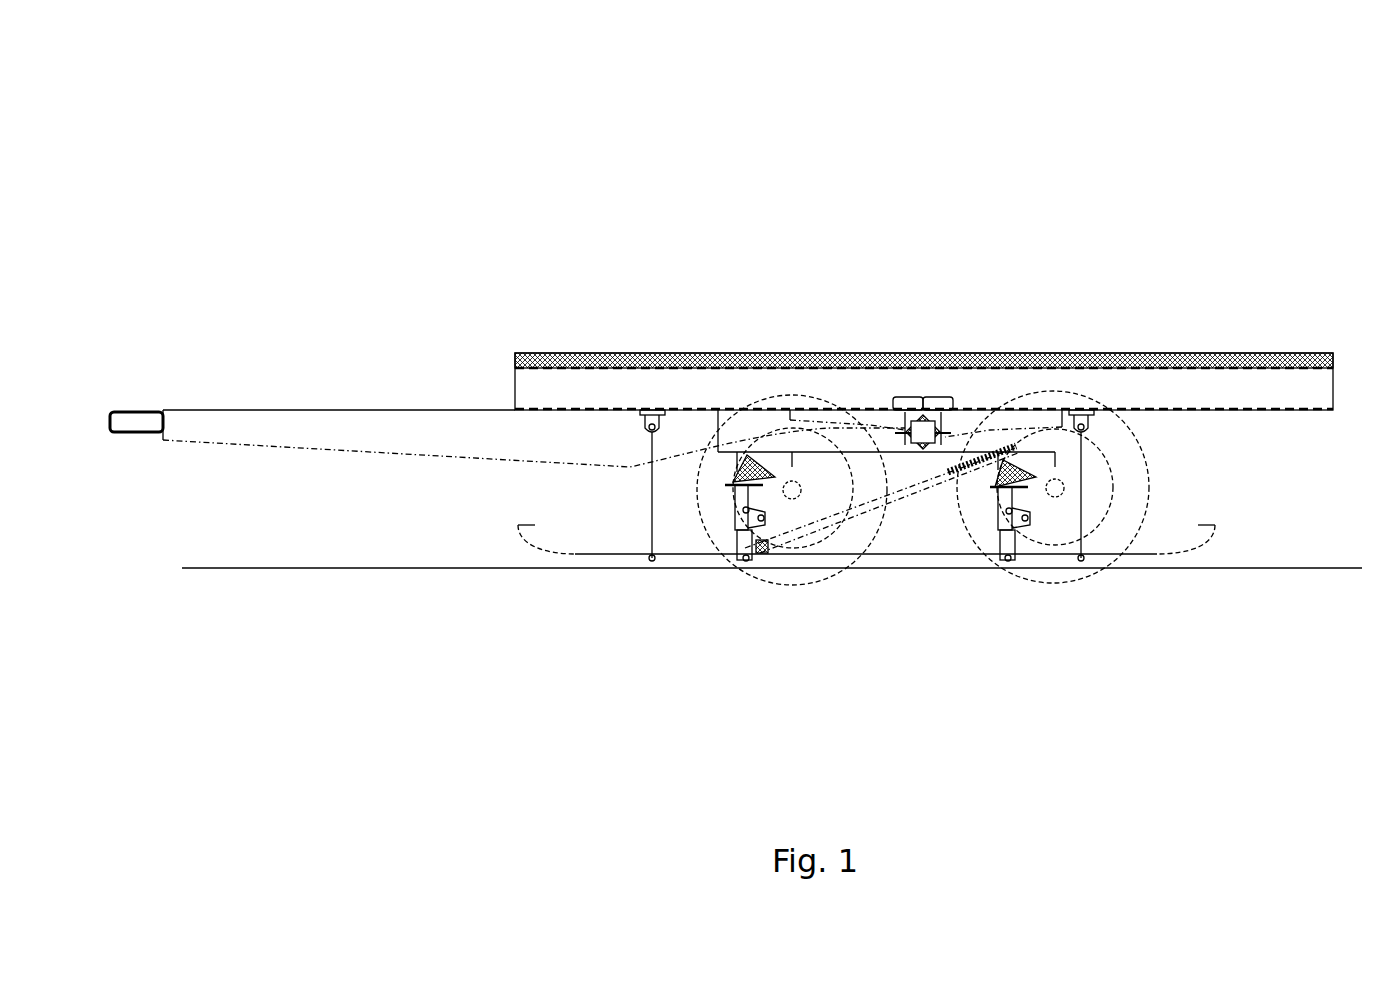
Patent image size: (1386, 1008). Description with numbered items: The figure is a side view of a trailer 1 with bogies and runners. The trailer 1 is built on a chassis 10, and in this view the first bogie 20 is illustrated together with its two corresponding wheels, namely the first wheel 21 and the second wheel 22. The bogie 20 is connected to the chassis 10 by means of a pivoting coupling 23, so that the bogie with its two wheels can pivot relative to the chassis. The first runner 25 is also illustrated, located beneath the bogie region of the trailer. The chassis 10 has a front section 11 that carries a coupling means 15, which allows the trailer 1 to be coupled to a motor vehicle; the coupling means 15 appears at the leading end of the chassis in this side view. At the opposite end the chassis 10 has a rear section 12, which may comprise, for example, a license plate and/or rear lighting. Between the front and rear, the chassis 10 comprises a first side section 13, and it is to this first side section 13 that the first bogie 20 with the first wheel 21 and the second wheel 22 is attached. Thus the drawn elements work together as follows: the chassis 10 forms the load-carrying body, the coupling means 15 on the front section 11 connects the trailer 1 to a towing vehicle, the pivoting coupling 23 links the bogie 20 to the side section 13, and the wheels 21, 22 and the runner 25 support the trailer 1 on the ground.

The trailer 1 is at (736, 382).
The chassis 10 is at (477, 400).
The front section 11 is at (413, 420).
The rear section 12 is at (1330, 380).
The first side section 13 is at (1103, 385).
The coupling means 15 is at (140, 408).
The first bogie 20 is at (864, 405).
The first wheel 21 is at (762, 582).
The second wheel 22 is at (1053, 583).
The pivoting coupling 23 is at (903, 400).
The first runner 25 is at (1167, 568).